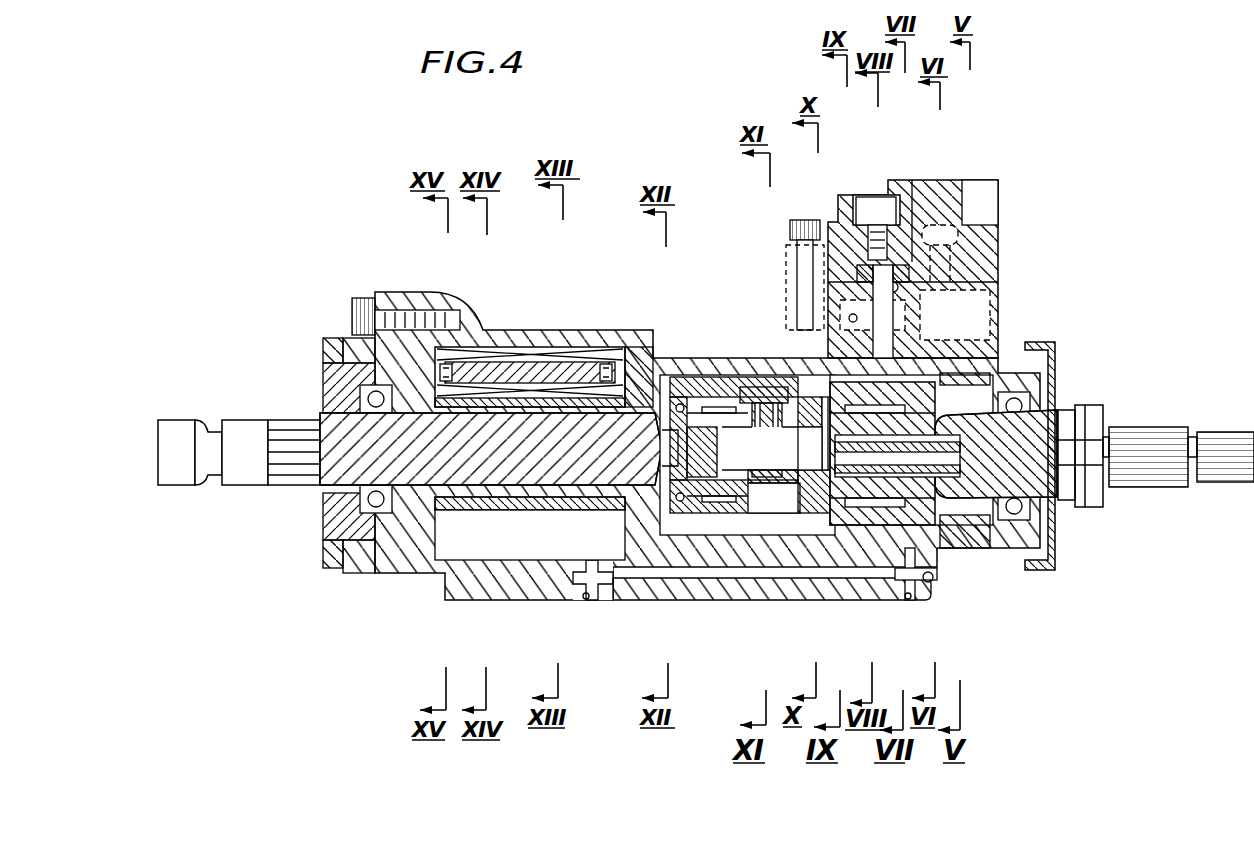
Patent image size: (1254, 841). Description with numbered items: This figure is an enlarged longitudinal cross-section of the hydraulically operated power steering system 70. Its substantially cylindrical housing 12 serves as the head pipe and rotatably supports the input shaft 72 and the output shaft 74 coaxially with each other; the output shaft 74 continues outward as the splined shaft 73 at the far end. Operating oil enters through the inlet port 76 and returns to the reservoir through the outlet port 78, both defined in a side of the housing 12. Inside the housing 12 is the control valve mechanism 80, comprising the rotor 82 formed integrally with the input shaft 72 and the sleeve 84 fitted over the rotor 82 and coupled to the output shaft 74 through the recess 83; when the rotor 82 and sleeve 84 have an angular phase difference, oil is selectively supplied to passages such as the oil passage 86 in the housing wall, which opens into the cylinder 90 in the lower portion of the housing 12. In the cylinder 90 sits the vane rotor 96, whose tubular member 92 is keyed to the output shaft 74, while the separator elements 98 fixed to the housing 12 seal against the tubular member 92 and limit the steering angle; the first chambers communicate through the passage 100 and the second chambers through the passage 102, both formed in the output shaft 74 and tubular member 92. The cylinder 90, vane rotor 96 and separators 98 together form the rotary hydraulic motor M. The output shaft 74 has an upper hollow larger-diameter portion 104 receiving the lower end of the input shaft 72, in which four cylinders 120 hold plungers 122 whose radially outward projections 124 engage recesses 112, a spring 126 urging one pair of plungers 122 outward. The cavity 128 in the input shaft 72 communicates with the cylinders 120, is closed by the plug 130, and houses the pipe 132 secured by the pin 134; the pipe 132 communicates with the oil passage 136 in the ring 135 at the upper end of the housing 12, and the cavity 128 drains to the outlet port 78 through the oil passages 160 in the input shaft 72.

The housing 12 is at (533, 590).
The hydraulically operated power steering system 70 is at (612, 226).
The input shaft 72 is at (1068, 506).
The output shaft 73 is at (1175, 430).
The output shaft 74 is at (325, 430).
The inlet port 76 is at (872, 218).
The outlet port 78 is at (950, 190).
The control valve mechanism 80 is at (888, 540).
The rotor 82 is at (867, 480).
The recess 83 is at (820, 513).
The sleeve 84 is at (937, 560).
The oil passage 86 is at (723, 578).
The cylinder 90 is at (485, 558).
The tubular member 92 is at (560, 384).
The vane rotor 96 is at (606, 364).
The separator elements 98 is at (522, 362).
The passage 100 is at (447, 458).
The passage 102 is at (487, 458).
The upper hollow larger-diameter portion 104 is at (655, 338).
The recesses 112 is at (762, 386).
The cylinders 120 is at (648, 450).
The plungers 122 is at (728, 395).
The radially outward projections 124 is at (772, 345).
The spring 126 is at (778, 470).
The cavity 128 is at (770, 513).
The plug 130 is at (690, 395).
The pipe 132 is at (1043, 398).
The pin 134 is at (871, 404).
The ring 135 is at (983, 522).
The oil passage 136 is at (990, 368).
The oil passages 160 is at (985, 345).
The rotary hydraulic motor M is at (600, 542).